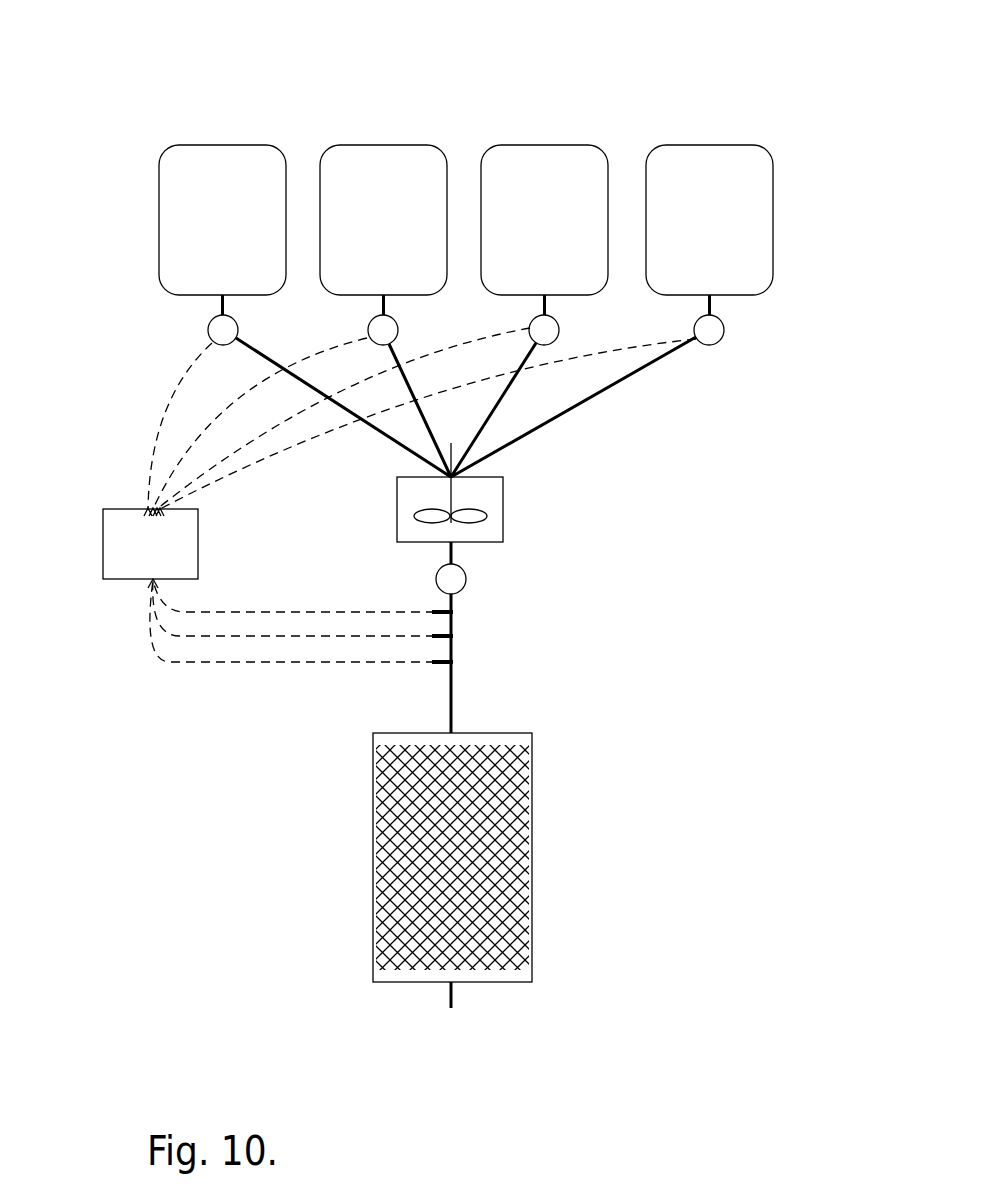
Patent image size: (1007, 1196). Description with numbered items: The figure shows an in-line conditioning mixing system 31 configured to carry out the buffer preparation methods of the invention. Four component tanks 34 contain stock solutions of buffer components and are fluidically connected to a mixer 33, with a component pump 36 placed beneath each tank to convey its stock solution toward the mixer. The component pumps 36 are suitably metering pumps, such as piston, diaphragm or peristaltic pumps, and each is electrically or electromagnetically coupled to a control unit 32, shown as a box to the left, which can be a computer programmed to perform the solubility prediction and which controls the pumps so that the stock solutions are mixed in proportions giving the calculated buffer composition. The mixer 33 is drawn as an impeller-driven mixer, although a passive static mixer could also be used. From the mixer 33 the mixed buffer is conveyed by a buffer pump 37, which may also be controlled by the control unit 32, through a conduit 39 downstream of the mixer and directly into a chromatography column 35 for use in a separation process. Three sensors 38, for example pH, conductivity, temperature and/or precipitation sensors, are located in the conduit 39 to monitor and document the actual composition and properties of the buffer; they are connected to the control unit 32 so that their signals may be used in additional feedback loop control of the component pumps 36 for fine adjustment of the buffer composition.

The mixing system 31 is at (710, 578).
The control unit 32 is at (103, 541).
The mixer 33 is at (503, 508).
The component tanks 34 is at (707, 145).
The chromatography column 35 is at (530, 733).
The component pumps 36 is at (560, 330).
The buffer pump 37 is at (467, 578).
The sensors 38 is at (453, 662).
The conduit 39 is at (446, 693).